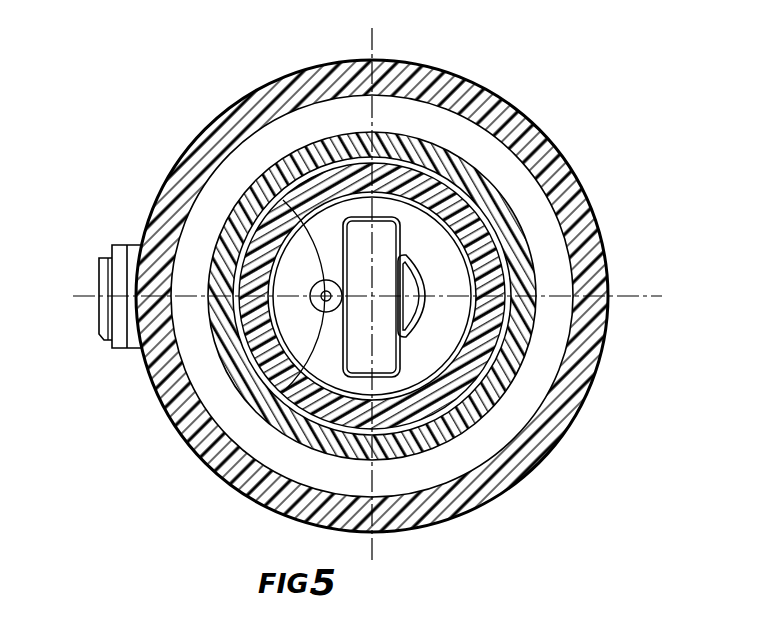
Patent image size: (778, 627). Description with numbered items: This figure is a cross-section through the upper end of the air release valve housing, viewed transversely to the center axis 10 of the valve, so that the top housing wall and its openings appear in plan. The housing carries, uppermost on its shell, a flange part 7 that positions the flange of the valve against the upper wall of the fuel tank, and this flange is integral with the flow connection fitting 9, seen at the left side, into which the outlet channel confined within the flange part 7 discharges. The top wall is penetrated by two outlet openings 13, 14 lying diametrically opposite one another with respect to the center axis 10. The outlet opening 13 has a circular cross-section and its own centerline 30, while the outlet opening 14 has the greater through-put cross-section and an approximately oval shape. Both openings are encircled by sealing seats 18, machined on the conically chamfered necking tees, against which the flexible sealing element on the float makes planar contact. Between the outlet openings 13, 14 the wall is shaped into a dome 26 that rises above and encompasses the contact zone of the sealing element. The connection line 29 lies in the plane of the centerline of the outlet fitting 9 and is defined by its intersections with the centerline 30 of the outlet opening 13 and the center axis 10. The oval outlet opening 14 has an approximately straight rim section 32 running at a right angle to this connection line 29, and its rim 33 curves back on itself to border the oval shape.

The flange part 7 is at (569, 146).
The flow connection fitting 9 is at (100, 265).
The center axis 10 is at (370, 285).
The outlet opening 13 is at (151, 383).
The outlet opening 14 is at (405, 322).
The sealing seats 18 is at (420, 267).
The dome 26 is at (372, 340).
The connection line 29 is at (383, 290).
The centerline of the outlet opening 30 is at (267, 175).
The straight line rim section 32 is at (425, 287).
The rim 33 is at (400, 360).